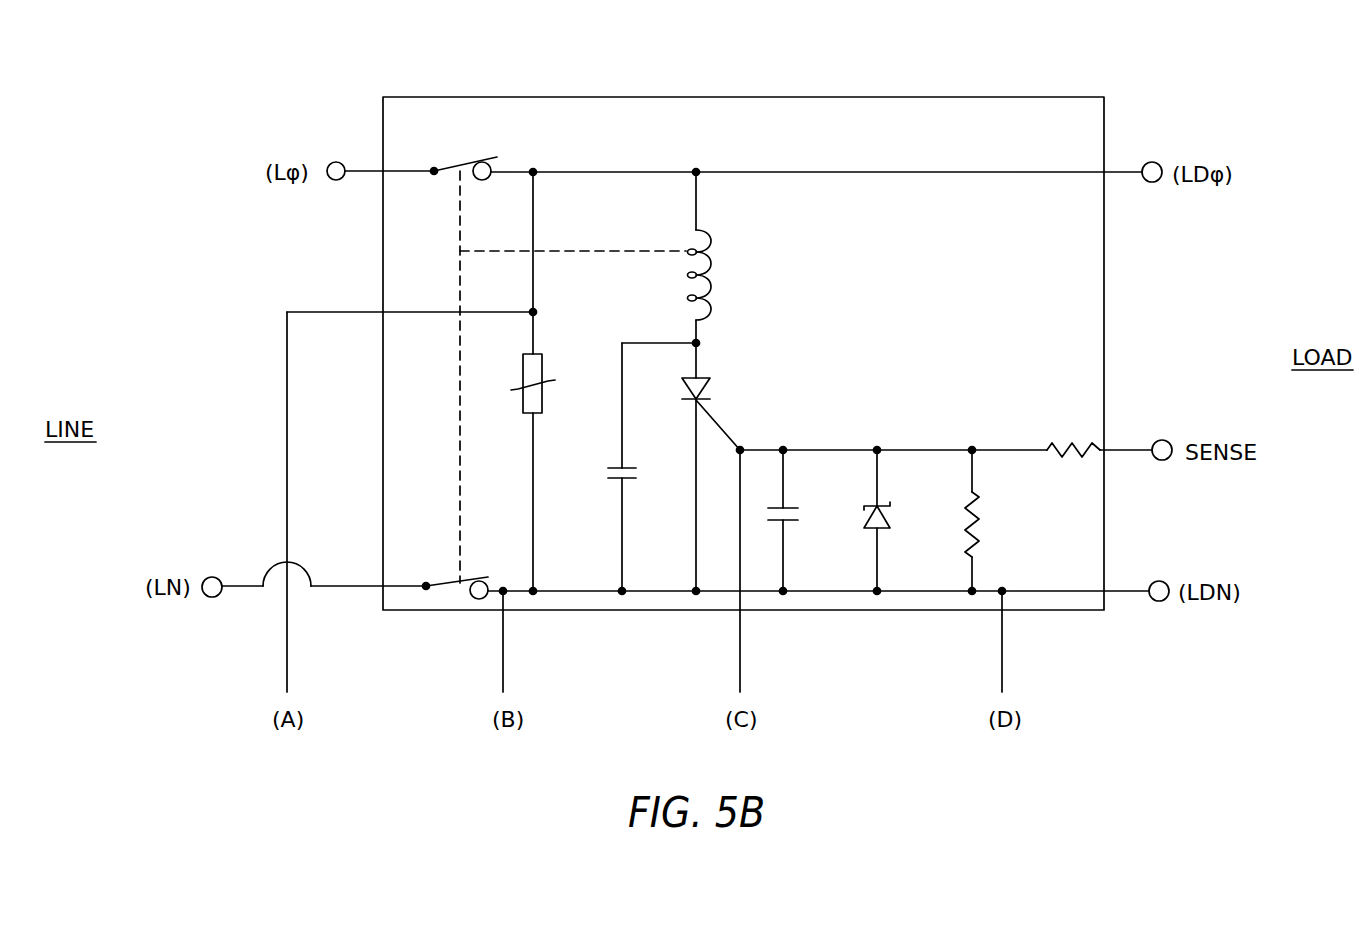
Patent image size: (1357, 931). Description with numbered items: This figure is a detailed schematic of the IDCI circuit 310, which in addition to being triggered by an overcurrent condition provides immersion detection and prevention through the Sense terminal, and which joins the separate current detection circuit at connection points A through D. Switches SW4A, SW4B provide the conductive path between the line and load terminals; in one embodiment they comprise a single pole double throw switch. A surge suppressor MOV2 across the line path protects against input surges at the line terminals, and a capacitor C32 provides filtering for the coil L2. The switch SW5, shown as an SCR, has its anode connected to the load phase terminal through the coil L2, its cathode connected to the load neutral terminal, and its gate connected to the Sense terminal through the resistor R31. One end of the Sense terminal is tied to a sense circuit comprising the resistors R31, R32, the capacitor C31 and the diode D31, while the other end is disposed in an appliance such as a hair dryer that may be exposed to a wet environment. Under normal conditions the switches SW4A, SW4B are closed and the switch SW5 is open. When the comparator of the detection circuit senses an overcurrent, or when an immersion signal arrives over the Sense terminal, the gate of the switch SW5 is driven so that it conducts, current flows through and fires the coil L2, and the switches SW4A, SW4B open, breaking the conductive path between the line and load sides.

The IDCI circuit 310 is at (840, 97).
The switch SW4A is at (481, 148).
The switch SW4B is at (448, 582).
The coil L2 is at (707, 281).
The surge suppressor MOV2 is at (563, 381).
The capacitor C32 is at (636, 473).
The switch SW5 is at (706, 392).
The capacitor C31 is at (798, 516).
The diode D31 is at (891, 518).
The resistor R31 is at (1090, 444).
The resistor R32 is at (980, 521).